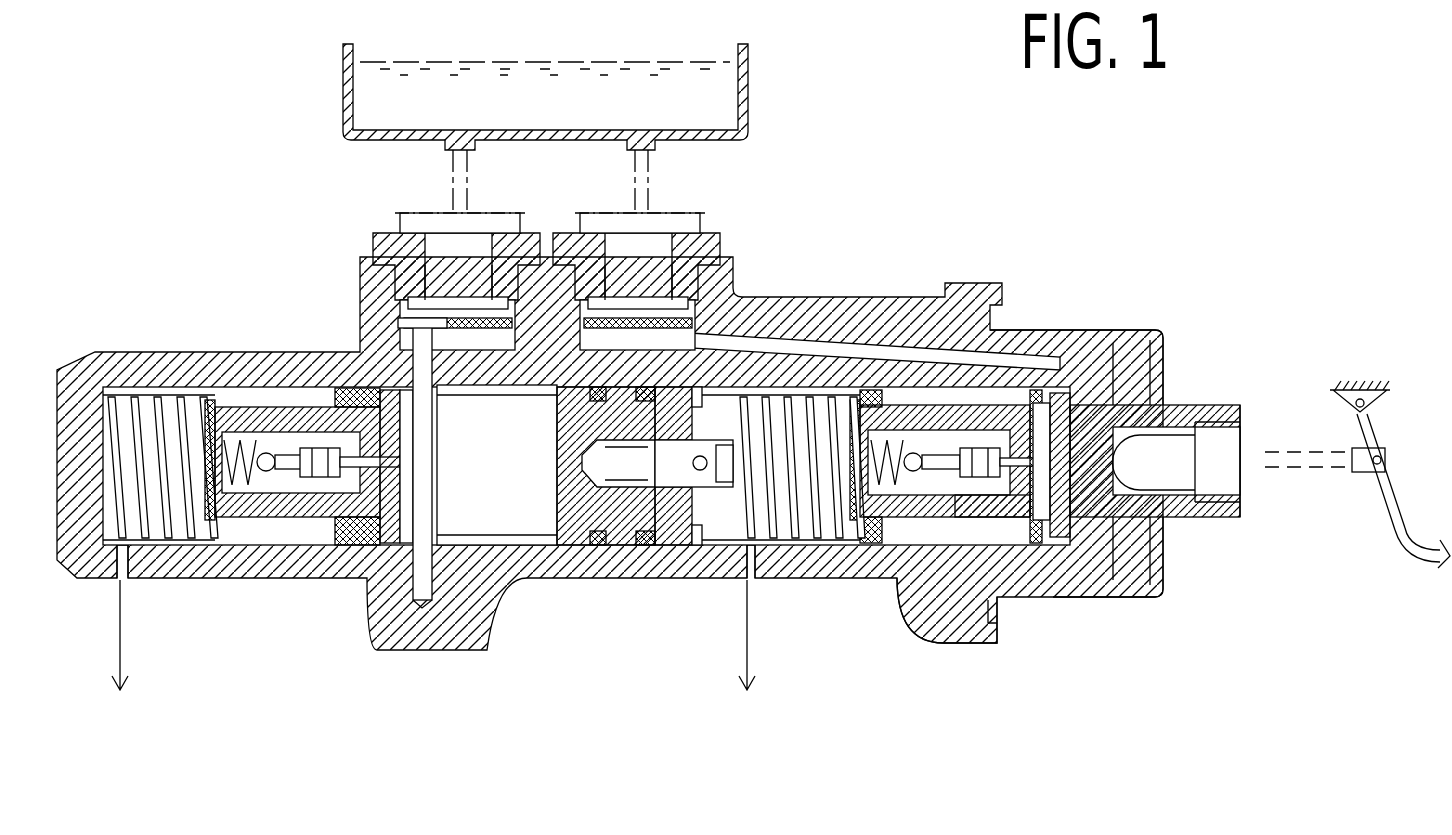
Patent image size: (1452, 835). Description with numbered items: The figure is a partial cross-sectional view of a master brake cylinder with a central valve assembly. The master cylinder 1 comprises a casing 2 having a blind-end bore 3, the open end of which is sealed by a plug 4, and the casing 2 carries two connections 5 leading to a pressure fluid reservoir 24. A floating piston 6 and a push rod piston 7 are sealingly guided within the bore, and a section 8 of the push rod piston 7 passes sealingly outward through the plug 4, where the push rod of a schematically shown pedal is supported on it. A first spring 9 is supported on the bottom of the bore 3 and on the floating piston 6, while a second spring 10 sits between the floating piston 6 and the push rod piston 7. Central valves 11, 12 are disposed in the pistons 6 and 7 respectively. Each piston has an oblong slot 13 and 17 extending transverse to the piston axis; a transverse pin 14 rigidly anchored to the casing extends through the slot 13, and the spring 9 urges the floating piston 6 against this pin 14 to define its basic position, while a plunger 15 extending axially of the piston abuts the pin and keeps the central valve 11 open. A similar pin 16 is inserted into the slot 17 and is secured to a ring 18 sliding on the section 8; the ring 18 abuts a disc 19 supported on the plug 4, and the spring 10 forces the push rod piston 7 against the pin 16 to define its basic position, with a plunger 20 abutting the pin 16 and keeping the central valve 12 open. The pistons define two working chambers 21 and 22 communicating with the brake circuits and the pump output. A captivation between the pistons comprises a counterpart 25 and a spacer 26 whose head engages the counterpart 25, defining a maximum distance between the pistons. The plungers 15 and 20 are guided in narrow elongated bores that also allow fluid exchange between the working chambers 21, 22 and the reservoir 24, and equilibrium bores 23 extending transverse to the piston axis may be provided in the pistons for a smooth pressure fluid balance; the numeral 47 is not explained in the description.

The master cylinder 1 is at (575, 632).
The casing 2 is at (938, 608).
The blind-end bore 3 is at (905, 540).
The plug 4 is at (1150, 522).
The connections 5 is at (607, 240).
The floating piston 6 is at (350, 398).
The push rod piston 7 is at (905, 396).
The section of the push rod piston 8 is at (1212, 405).
The first spring 9 is at (193, 545).
The second spring 10 is at (808, 545).
The central valve 11 is at (308, 535).
The central valve 12 is at (968, 505).
The slot 13 is at (500, 510).
The transverse pin 14 is at (400, 596).
The plunger 15 is at (365, 545).
The pin 16 is at (1047, 530).
The slot 17 is at (1112, 580).
The ring 18 is at (1058, 350).
The disc 19 is at (1073, 335).
The plunger 20 is at (1012, 522).
The working chamber 21 is at (153, 578).
The working chamber 22 is at (760, 578).
The equilibrium bores 23 is at (378, 432).
The pressure fluid reservoir 24 is at (748, 70).
The counterpart 25 is at (690, 495).
The spacer 26 is at (735, 545).
The spring seat 47 is at (193, 425).